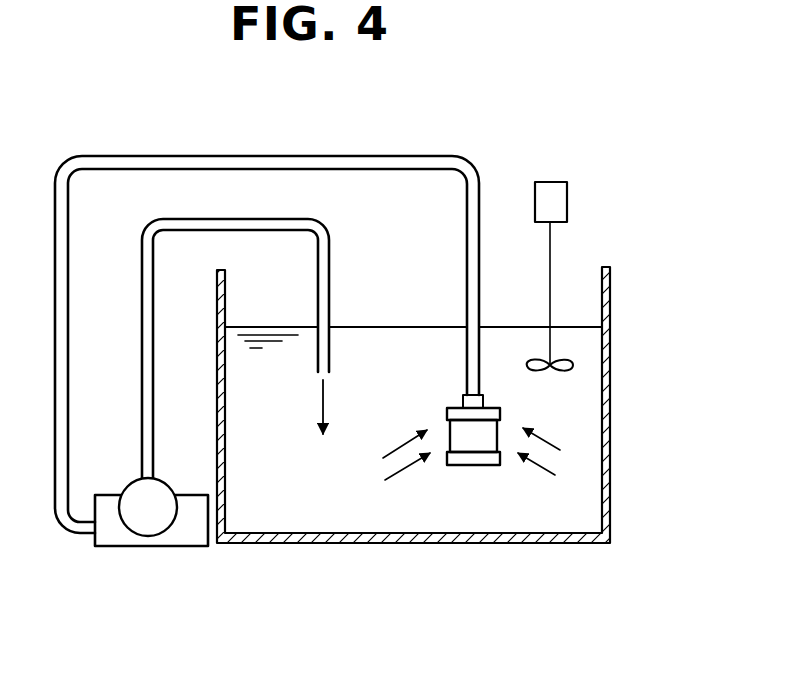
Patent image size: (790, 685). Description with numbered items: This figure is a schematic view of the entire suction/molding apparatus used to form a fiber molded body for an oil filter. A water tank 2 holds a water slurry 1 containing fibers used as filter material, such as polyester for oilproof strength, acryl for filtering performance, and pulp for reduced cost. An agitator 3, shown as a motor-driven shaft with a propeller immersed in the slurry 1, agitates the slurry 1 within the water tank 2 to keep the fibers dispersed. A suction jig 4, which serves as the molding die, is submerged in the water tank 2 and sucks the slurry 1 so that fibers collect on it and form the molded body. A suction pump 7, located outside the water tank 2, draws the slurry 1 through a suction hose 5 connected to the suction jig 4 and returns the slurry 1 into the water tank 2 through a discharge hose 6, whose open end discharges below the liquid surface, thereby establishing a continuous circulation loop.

The water slurry 1 is at (260, 513).
The water tank 2 is at (608, 408).
The agitator 3 is at (566, 359).
The suction jig 4 is at (475, 473).
The suction hose 5 is at (129, 156).
The discharge hose 6 is at (205, 219).
The suction pump 7 is at (114, 535).